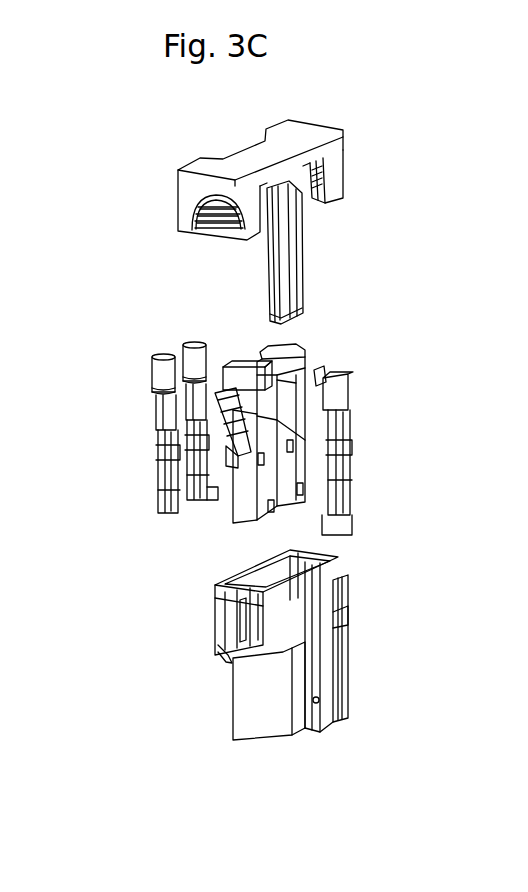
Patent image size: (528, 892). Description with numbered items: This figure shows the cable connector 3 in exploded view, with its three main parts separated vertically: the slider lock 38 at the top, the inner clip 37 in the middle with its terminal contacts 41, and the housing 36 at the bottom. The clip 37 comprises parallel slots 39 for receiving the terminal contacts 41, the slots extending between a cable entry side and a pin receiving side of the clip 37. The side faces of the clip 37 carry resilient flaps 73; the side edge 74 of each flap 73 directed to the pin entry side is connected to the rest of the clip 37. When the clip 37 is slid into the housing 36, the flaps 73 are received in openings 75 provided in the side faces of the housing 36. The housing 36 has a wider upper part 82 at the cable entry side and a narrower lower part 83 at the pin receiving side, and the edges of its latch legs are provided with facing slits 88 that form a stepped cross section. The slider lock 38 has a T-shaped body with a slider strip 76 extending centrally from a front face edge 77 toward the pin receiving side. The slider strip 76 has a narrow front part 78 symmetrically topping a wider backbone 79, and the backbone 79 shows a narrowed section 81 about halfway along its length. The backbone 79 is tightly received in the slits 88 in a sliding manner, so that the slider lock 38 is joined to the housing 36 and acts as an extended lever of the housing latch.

The cable connector 3 is at (443, 218).
The front face edge 77 is at (287, 172).
The slider lock 38 is at (333, 178).
The slider strip 76 is at (292, 235).
The narrowed section 81 is at (272, 258).
The narrow front part 78 is at (303, 278).
The backbone 79 is at (288, 312).
The inner clip 37 is at (303, 452).
The parallel slots 39 is at (250, 340).
The resilient flaps 73 is at (238, 405).
The side edge 74 is at (229, 452).
The terminal contacts 41 is at (184, 509).
The housing 36 is at (343, 614).
The wider upper part 82 is at (218, 603).
The openings 75 is at (240, 628).
The narrower lower part 83 is at (248, 702).
The slits 88 is at (320, 692).